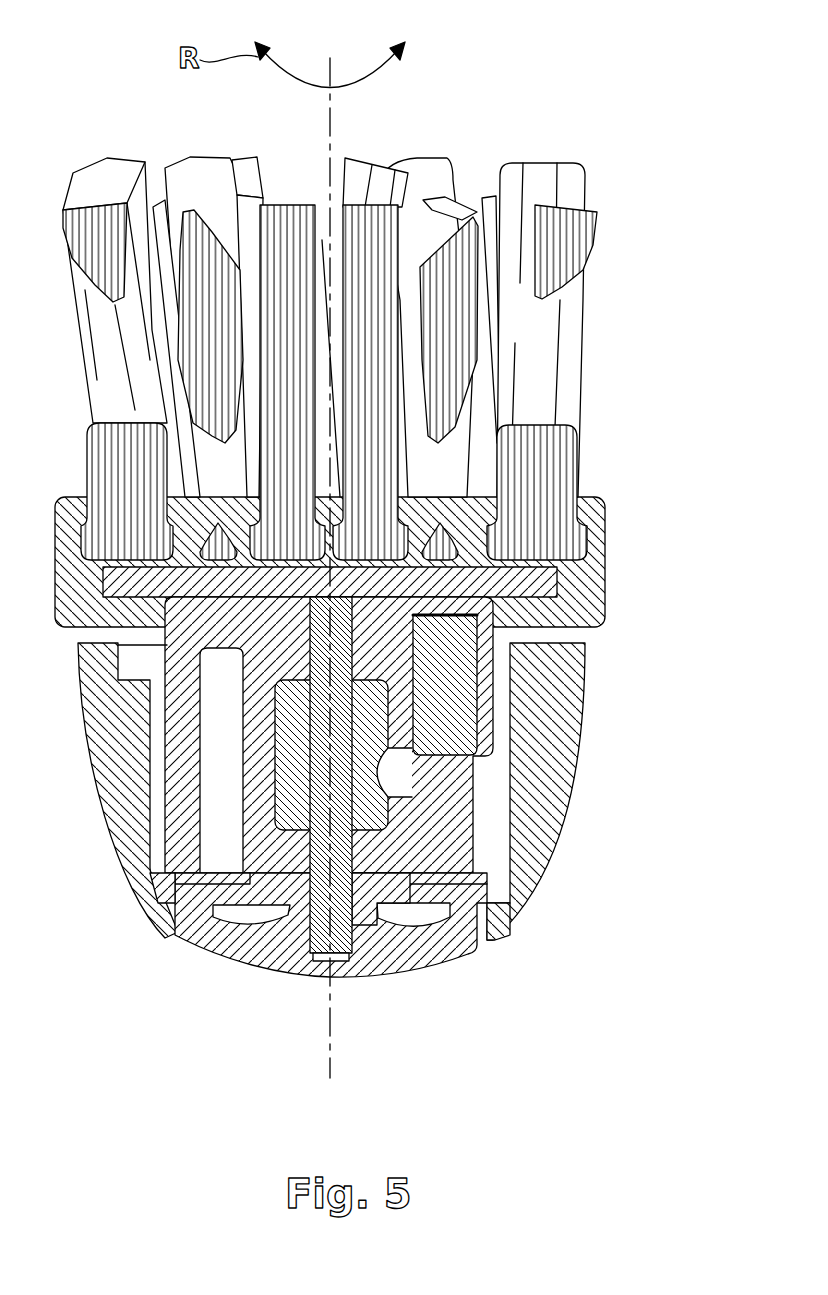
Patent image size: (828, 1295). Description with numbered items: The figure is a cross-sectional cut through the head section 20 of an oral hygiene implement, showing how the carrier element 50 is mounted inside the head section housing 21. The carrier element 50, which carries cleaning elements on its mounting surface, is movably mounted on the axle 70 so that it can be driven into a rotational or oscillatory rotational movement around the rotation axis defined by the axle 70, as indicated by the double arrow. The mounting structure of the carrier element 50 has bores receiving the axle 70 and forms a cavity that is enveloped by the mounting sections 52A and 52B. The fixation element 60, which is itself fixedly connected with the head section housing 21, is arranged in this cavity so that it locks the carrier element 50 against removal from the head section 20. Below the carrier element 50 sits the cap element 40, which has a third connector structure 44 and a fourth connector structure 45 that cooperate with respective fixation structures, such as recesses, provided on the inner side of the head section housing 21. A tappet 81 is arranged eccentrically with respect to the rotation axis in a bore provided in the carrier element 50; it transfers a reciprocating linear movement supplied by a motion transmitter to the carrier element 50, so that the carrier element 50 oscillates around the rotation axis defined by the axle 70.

The head section 20 is at (427, 118).
The head section housing 21 is at (550, 708).
The cap element 40 is at (367, 955).
The third connector structure 44 is at (160, 888).
The fourth connector structure 45 is at (507, 887).
The carrier element 50 is at (587, 586).
The mounting section 52A is at (377, 643).
The mounting section 52B is at (383, 877).
The fixation element 60 is at (355, 786).
The axle 70 is at (300, 905).
The tappet 81 is at (447, 762).